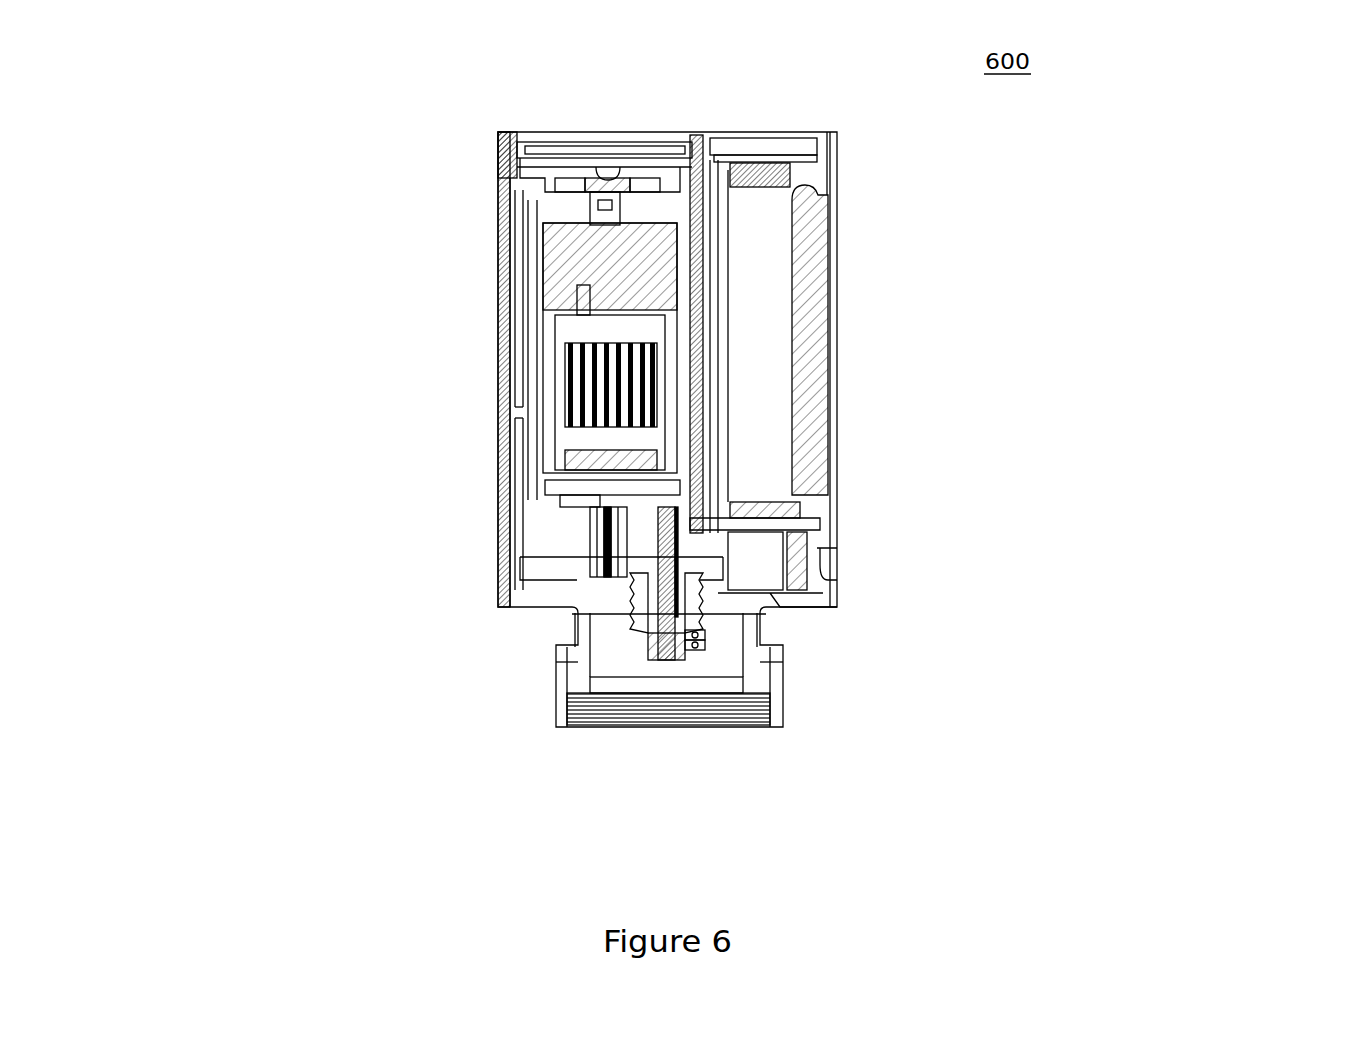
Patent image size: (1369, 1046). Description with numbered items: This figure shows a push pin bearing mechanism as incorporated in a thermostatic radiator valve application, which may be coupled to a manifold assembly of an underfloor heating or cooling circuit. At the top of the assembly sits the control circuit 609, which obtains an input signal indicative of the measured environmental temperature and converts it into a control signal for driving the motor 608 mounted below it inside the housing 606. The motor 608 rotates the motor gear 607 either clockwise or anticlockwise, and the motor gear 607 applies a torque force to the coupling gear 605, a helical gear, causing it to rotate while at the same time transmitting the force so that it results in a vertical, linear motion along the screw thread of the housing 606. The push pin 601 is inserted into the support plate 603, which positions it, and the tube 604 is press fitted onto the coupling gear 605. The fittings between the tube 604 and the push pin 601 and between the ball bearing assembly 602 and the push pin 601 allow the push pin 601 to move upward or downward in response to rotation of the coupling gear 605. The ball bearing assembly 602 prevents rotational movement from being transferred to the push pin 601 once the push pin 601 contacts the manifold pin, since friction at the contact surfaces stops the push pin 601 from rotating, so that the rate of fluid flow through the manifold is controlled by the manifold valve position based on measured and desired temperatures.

The push pin 601 is at (707, 657).
The ball bearing assembly 602 is at (707, 636).
The support plate 603 is at (703, 613).
The tube 604 is at (694, 530).
The coupling gear 605 is at (628, 597).
The housing 606 is at (568, 626).
The motor gear 607 is at (596, 534).
The motor 608 is at (540, 253).
The control circuit 609 is at (518, 149).